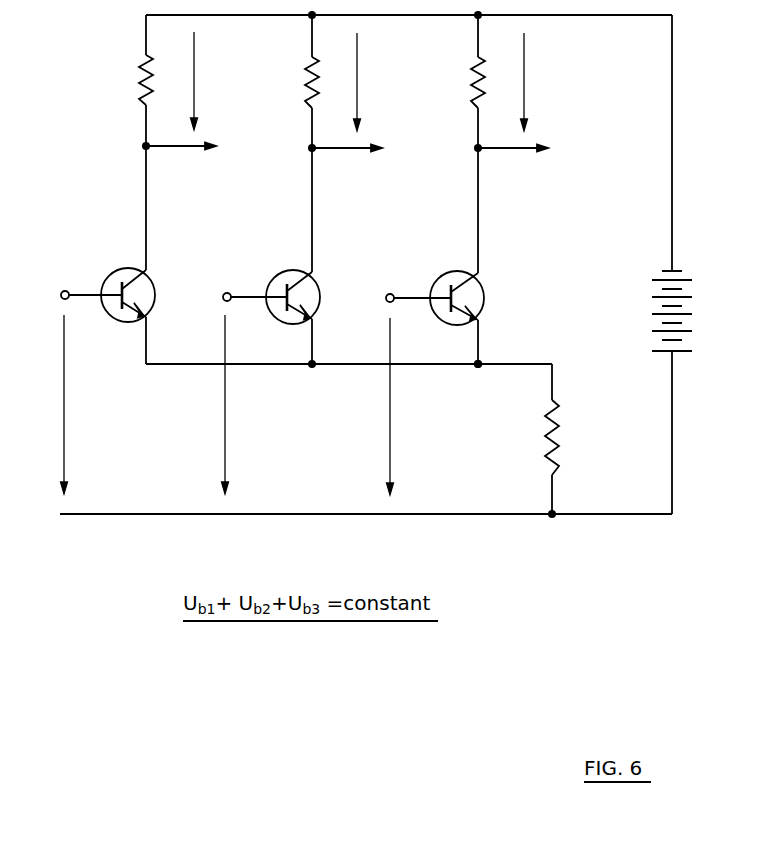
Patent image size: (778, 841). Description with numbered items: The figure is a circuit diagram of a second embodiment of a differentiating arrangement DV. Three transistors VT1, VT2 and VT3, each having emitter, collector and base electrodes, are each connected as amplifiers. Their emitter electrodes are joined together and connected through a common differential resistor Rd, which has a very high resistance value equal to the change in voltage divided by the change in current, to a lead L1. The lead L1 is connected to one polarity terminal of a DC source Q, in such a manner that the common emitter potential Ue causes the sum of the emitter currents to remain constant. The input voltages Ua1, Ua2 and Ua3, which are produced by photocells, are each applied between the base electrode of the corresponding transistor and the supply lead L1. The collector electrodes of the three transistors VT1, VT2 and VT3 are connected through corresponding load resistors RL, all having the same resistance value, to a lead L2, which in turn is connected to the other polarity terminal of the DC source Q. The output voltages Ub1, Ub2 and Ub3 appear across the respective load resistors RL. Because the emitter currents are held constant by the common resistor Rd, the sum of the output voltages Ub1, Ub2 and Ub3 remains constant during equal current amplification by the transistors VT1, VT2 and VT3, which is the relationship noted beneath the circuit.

The lead L2 is at (409, 7).
The lead L1 is at (366, 529).
The load resistors RL is at (322, 81).
The output voltage Ub1 is at (213, 81).
The output voltage Ub2 is at (376, 82).
The output voltage Ub3 is at (543, 82).
The transistor VT1 is at (108, 284).
The transistor VT2 is at (271, 286).
The transistor VT3 is at (435, 286).
The input voltage Ua1 is at (81, 404).
The input voltage Ua2 is at (243, 404).
The input voltage Ua3 is at (408, 406).
The common emitter potential Ue is at (481, 361).
The common differential resistor Rd is at (608, 440).
The DC source Q is at (662, 311).
The differentiating arrangement DV is at (641, 246).